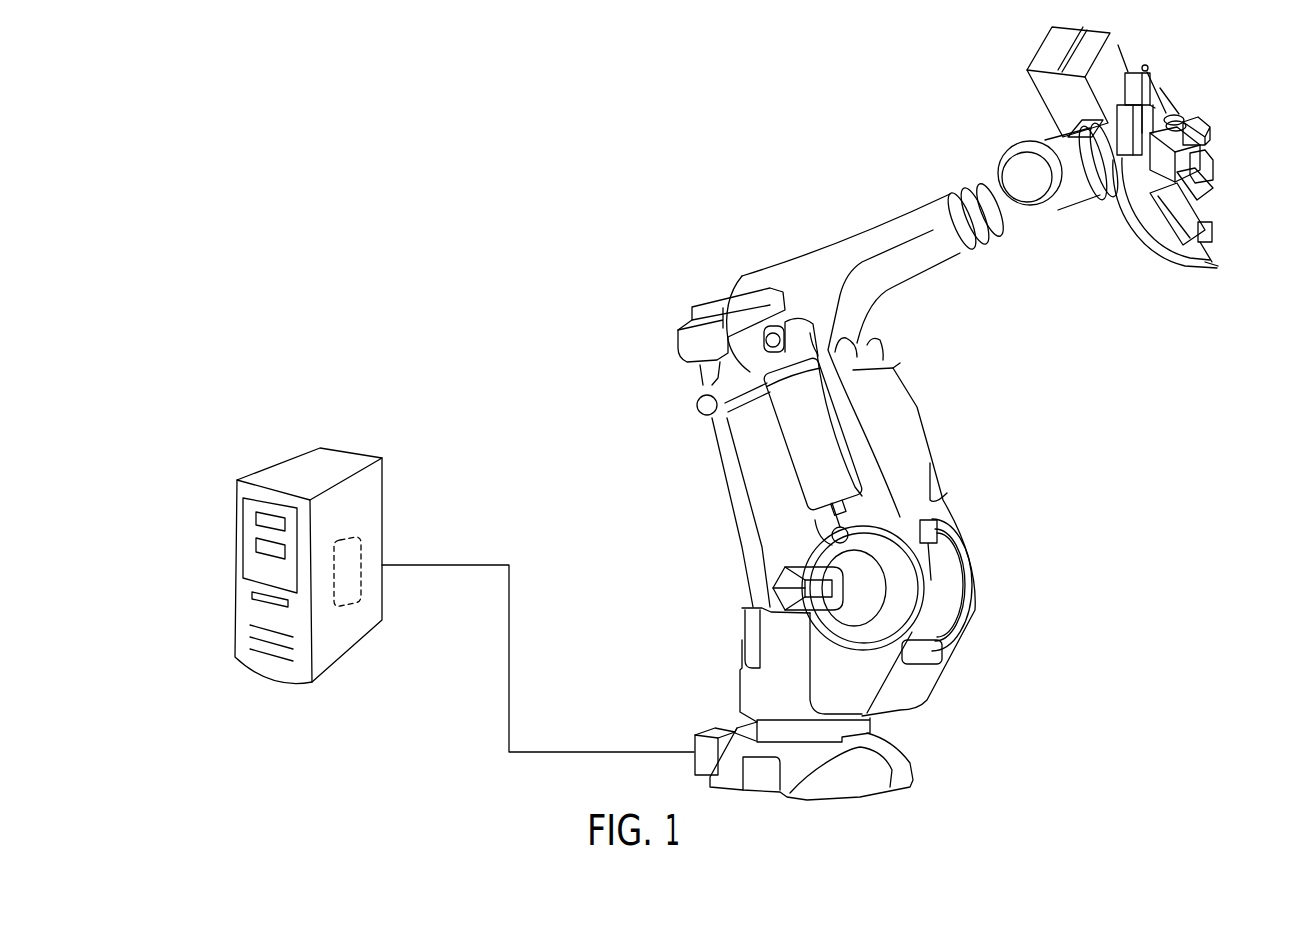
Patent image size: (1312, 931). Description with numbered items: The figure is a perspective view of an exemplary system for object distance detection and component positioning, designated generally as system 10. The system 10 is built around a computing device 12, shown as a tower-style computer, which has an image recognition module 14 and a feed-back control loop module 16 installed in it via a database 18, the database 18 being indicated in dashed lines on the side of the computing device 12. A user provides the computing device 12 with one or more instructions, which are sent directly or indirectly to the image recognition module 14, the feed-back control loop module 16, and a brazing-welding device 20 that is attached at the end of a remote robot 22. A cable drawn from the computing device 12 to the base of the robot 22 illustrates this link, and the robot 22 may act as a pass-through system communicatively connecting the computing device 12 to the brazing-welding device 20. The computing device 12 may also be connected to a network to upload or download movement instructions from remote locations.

The system for object distance detection and component positioning 10 is at (614, 253).
The computing device 12 is at (333, 458).
The image recognition module 14 is at (262, 545).
The feed-back control loop module 16 is at (262, 517).
The database 18 is at (362, 555).
The brazing-welding device 20 is at (1226, 180).
The remote robot 22 is at (934, 419).